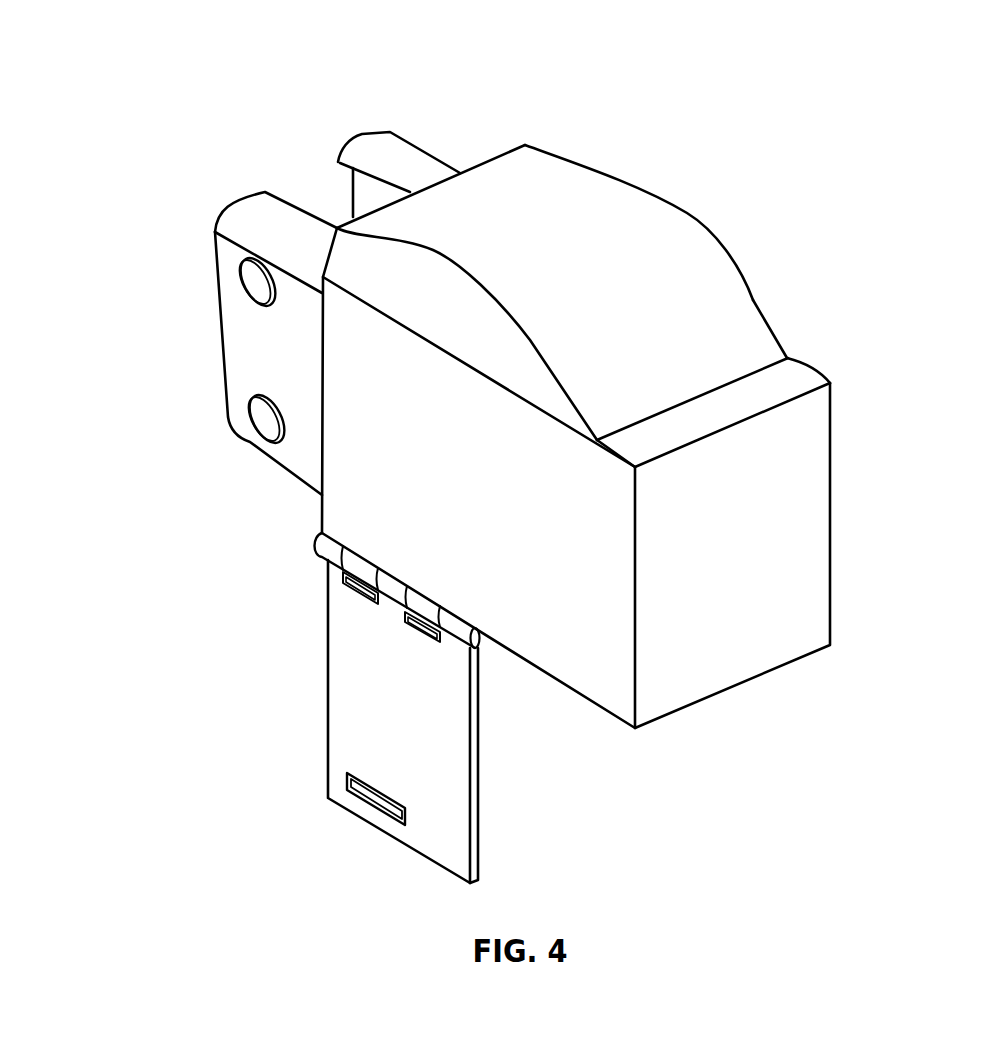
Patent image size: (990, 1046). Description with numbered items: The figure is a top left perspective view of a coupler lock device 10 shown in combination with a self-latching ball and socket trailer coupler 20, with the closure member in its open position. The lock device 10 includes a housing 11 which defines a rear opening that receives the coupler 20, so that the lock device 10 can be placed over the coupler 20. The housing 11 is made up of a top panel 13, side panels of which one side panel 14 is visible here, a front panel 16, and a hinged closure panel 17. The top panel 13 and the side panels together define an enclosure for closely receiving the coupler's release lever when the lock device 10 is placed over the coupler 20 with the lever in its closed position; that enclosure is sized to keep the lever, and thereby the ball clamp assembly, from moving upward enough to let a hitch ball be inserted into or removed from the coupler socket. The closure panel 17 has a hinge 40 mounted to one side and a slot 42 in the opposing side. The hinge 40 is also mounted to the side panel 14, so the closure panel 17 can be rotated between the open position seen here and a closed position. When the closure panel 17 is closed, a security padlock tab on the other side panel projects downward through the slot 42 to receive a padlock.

The coupler lock device 10 is at (623, 167).
The housing 11 is at (753, 300).
The top panel 13 is at (663, 263).
The side panel 14 is at (393, 410).
The front panel 16 is at (793, 463).
The hinged closure panel 17 is at (353, 657).
The coupler 20 is at (195, 285).
The hinge 40 is at (323, 547).
The slot 42 is at (370, 803).